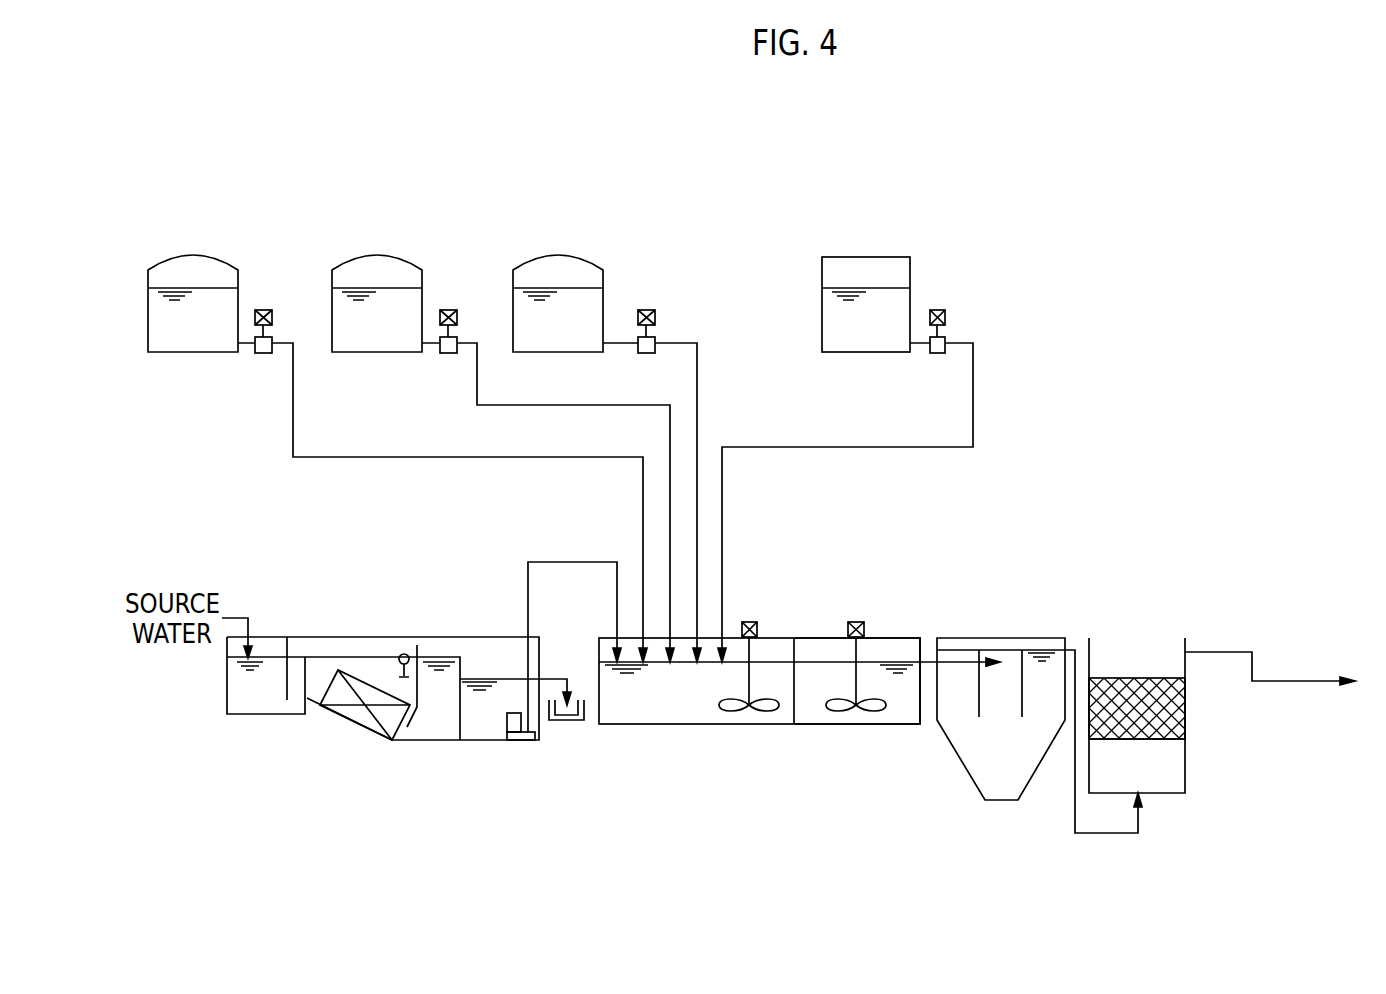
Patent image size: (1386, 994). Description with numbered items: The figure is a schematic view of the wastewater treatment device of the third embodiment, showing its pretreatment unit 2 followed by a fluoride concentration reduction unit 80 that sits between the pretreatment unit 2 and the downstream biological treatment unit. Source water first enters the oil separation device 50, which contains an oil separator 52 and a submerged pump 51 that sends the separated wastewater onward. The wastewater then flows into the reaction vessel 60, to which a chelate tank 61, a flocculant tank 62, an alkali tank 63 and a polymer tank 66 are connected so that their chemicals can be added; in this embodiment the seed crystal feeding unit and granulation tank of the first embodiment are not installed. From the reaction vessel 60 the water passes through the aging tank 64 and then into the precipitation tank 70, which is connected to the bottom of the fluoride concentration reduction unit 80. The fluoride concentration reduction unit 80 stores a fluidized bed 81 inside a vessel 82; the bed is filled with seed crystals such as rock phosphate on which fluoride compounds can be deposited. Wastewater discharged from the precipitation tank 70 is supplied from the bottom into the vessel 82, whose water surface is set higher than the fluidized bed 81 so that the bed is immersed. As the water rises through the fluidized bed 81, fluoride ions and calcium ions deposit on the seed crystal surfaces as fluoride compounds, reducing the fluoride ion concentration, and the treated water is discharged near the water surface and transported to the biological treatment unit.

The pretreatment unit 2 is at (477, 563).
The oil separation device 50 is at (327, 637).
The submerged pump 51 is at (515, 725).
The oil separator 52 is at (363, 720).
The reaction vessel 60 is at (666, 724).
The chelate tank 61 is at (175, 255).
The flocculant tank 62 is at (360, 255).
The alkali tank 63 is at (540, 255).
The aging tank 64 is at (884, 724).
The polymer tank 66 is at (866, 257).
The precipitation tank 70 is at (998, 800).
The fluoride concentration reduction unit 80 is at (1222, 727).
The fluidized bed 81 is at (1130, 688).
The vessel 82 is at (1185, 773).